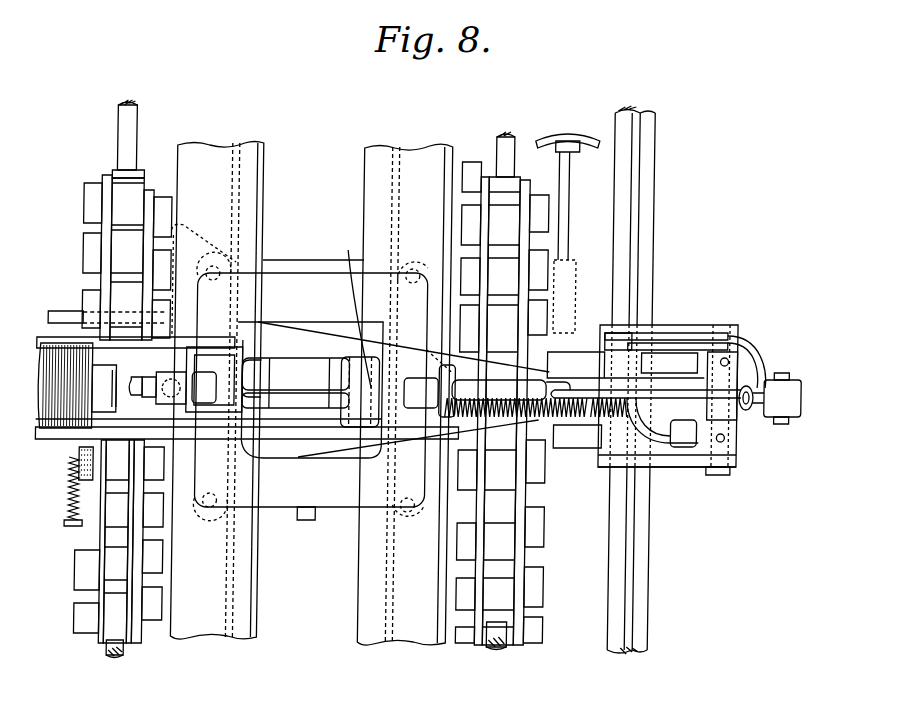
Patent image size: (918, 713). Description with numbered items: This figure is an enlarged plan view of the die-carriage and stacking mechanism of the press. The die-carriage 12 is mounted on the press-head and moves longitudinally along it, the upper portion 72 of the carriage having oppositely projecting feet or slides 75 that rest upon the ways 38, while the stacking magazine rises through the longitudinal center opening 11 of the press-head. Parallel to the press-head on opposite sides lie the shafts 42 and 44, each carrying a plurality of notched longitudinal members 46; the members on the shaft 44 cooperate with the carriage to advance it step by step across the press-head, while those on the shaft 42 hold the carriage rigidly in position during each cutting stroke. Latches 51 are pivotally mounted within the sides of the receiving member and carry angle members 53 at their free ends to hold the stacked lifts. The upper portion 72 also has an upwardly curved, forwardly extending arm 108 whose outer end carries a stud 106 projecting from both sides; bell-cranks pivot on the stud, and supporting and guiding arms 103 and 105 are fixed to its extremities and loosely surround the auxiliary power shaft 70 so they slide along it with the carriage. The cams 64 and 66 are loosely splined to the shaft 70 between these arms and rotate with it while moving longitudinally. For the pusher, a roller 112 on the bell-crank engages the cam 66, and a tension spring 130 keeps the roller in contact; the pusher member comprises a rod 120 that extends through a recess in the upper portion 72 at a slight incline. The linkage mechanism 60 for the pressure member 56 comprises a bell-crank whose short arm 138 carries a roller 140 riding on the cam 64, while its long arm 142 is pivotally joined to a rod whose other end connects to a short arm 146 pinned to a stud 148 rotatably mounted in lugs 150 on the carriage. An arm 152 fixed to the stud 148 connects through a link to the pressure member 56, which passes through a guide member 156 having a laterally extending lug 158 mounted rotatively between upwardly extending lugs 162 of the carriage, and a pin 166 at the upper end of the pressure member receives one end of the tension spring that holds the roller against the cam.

The longitudinal center opening 11 is at (301, 244).
The die-carriage 12 is at (310, 372).
The ways 38 is at (311, 394).
The shaft 42 is at (115, 645).
The shaft 44 is at (501, 643).
The notched longitudinal members 46 is at (84, 597).
The latches 51 is at (147, 373).
The angle members 53 is at (80, 432).
The pressure member 56 is at (150, 357).
The linkage mechanism 60 is at (784, 382).
The cam 64 is at (580, 357).
The cam 66 is at (592, 435).
The auxiliary power shaft 70 is at (647, 205).
The upper portion 72 is at (296, 383).
The feet or slides 75 is at (417, 458).
The supporting and guiding arm 103 is at (691, 468).
The supporting and guiding arm 105 is at (690, 327).
The stud 106 is at (730, 476).
The arm 108 is at (735, 418).
The roller 112 is at (674, 447).
The rod 120 is at (518, 395).
The tension spring 130 is at (503, 423).
The short arm 138 is at (637, 345).
The roller 140 is at (623, 357).
The long arm 142 is at (800, 340).
The short arm 146 is at (350, 306).
The stud 148 is at (361, 440).
The lugs 150 is at (352, 370).
The arm 152 is at (300, 433).
The guide member 156 is at (177, 367).
The laterally extending lug 158 is at (214, 387).
The lugs 162 is at (212, 383).
The pin 166 is at (86, 470).